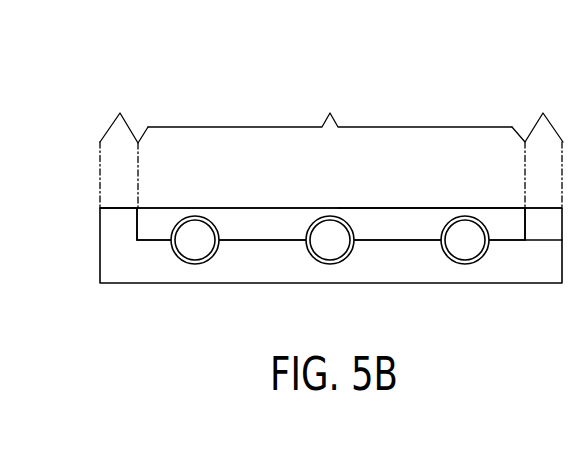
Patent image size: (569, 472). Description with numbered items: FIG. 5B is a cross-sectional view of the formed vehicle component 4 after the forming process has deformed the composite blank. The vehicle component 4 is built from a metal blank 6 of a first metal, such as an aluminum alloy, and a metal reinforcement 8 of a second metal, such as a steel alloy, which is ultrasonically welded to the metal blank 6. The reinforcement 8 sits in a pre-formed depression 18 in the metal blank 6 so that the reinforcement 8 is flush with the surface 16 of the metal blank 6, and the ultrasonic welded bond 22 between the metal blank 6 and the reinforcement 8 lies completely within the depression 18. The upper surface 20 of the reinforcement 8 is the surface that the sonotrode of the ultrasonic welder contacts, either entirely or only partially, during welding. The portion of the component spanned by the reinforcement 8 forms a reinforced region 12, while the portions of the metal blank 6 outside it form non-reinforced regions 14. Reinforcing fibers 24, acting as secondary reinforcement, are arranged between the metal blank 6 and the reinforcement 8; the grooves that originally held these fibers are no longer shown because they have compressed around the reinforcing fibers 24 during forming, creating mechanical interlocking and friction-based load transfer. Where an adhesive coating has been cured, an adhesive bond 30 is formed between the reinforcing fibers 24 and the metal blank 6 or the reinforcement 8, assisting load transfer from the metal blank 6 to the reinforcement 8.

The vehicle component 4 is at (500, 72).
The metal blank 6 is at (149, 272).
The reinforcement 8 is at (243, 228).
The reinforced region 12 is at (330, 107).
The non-reinforced region 14 is at (331, 147).
The surface 16 is at (125, 203).
The depression 18 is at (421, 233).
The surface of the reinforcement 20 is at (385, 205).
The ultrasonic welded bond 22 is at (258, 243).
The reinforcing fibers 24 is at (203, 235).
The adhesive bond 30 is at (352, 253).